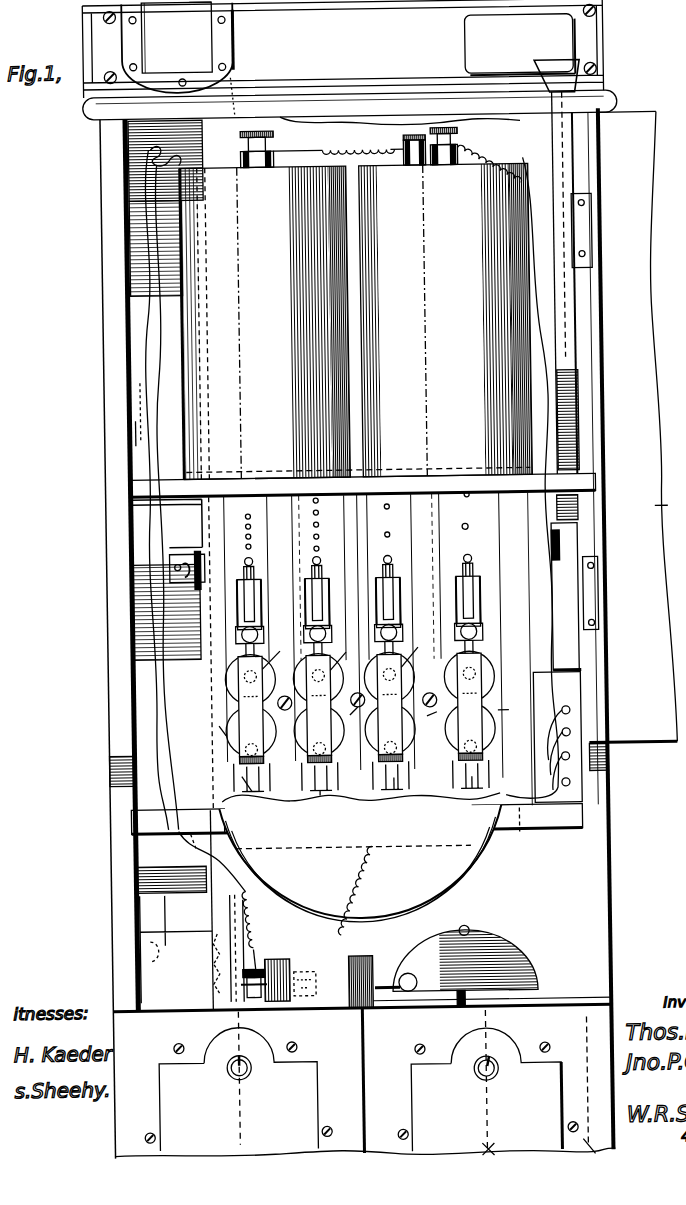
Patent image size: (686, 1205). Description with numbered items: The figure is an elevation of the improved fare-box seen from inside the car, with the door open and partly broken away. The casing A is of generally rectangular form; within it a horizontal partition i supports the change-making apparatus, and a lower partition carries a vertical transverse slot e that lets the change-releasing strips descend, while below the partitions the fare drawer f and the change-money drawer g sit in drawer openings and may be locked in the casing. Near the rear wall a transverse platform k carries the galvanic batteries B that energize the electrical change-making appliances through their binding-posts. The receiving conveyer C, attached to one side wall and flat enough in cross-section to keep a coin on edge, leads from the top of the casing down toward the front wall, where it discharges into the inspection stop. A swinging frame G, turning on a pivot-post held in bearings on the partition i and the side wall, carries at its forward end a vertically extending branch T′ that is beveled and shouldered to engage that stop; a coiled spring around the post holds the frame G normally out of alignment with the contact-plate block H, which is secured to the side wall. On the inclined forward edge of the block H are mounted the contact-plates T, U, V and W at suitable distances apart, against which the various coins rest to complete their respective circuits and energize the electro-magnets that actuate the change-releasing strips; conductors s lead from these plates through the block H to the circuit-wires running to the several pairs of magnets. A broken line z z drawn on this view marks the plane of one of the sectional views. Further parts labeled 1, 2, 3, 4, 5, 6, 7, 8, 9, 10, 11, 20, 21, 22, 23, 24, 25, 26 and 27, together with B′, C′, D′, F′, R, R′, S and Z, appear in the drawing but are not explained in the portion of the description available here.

The casing partition 1 is at (557, 852).
The casing plate 2 is at (499, 750).
The electric conductor wire 3 is at (144, 345).
The guide 4 is at (508, 707).
The guide 5 is at (432, 721).
The guide 6 is at (355, 718).
The guide 7 is at (219, 737).
The coin chute outlet 8 is at (462, 790).
The coin chute outlet 9 is at (382, 790).
The coin chute outlet 10 is at (310, 795).
The coin chute outlet 11 is at (242, 790).
The wire 20 is at (135, 430).
The circuit breaker 21 is at (246, 970).
The contact 22 is at (291, 971).
The spring 23 is at (323, 935).
The electromagnet 24 is at (212, 150).
The electromagnet 25 is at (407, 166).
The electromagnet 26 is at (439, 166).
The wire 27 is at (320, 124).
The casing A is at (99, 287).
The electrical galvanic batteries B is at (356, 321).
The drum compartment B′ is at (153, 377).
The receiving conveyer C is at (591, 66).
The fare plate frame C′ is at (226, 27).
The fare card D′ is at (204, 41).
The contact bracket F′ is at (195, 570).
The swinging frame G is at (530, 693).
The contact-plate block H is at (567, 694).
The coin wheel R is at (474, 674).
The coin wheel R′ is at (416, 644).
The coin wheel S is at (360, 722).
The contact-plate T is at (476, 638).
The vertically-extending branch T′ is at (232, 635).
The contact-plate U is at (254, 607).
The contact-plate V is at (248, 557).
The contact-plate W is at (237, 600).
The hole Z is at (470, 530).
The broken section line z is at (356, 832).
The vertical slot e is at (667, 506).
The fare drawer f is at (303, 1037).
The change-money drawer g is at (447, 1038).
The horizontal partition i is at (519, 838).
The transverse platform k is at (407, 467).
The conductors s is at (561, 713).